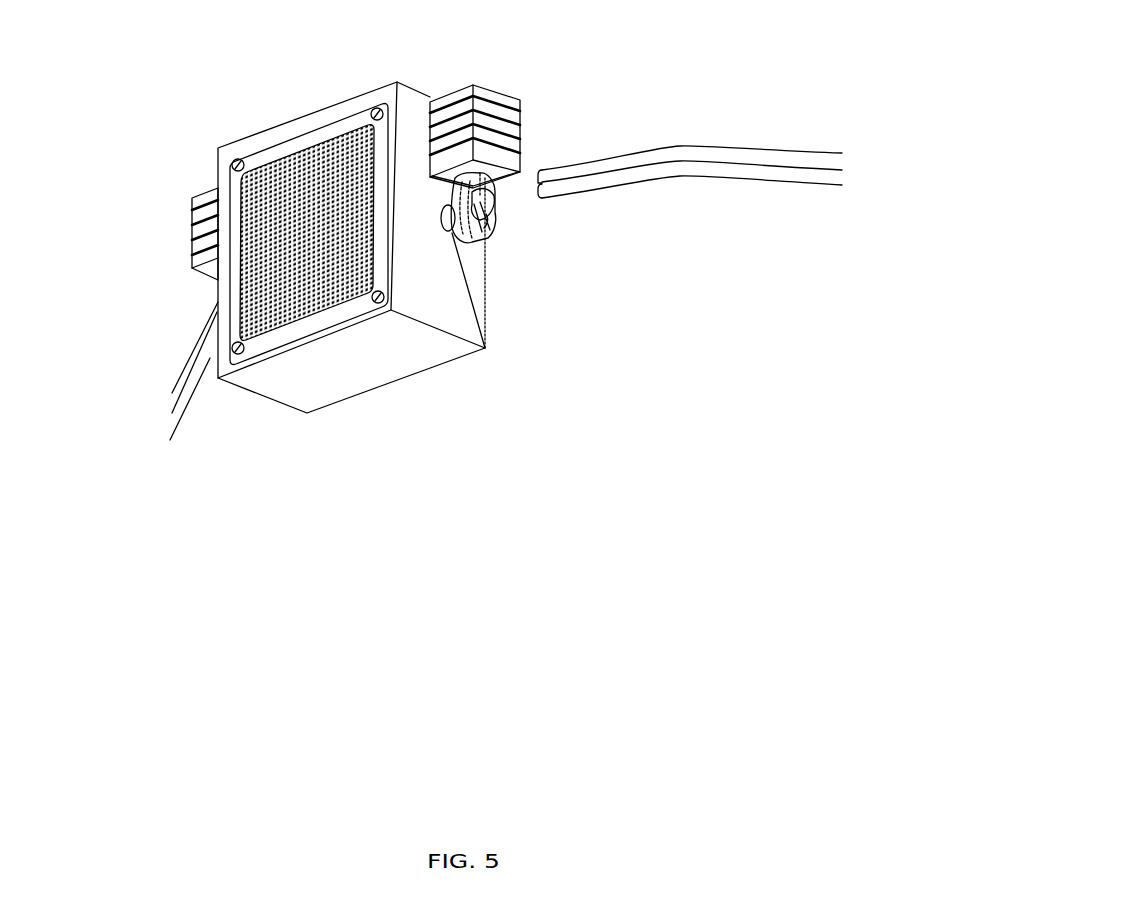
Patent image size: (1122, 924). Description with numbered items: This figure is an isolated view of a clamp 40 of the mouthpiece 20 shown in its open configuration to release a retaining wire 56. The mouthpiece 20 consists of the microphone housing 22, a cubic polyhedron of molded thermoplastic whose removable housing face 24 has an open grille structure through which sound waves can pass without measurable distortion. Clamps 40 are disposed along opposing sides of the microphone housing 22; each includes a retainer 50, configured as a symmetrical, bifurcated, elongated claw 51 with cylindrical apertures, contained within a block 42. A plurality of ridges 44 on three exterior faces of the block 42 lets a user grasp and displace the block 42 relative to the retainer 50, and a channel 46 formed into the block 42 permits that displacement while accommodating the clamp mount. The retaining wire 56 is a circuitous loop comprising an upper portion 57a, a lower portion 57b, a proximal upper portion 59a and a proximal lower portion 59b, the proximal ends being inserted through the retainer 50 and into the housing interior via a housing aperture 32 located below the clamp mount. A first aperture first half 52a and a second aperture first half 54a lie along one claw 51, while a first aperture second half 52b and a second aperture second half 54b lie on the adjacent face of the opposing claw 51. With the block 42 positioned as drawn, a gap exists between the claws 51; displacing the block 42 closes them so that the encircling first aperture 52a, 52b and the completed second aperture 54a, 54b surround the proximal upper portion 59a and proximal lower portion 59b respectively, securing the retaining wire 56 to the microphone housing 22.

The mouthpiece 20 is at (217, 64).
The microphone housing 22 is at (347, 377).
The housing face 24 is at (240, 283).
The housing aperture 32 is at (490, 240).
The clamp 40 is at (551, 91).
The block 42 is at (359, 148).
The ridges 44 is at (521, 133).
The channel 46 is at (475, 170).
The retainer 50 is at (550, 260).
The claw 51 is at (495, 198).
The first aperture first half 52a is at (484, 220).
The first aperture second half 52b is at (497, 203).
The second aperture first half 54a is at (480, 225).
The second aperture second half 54b is at (492, 212).
The retaining wire 56 is at (460, 239).
The upper portion 57a is at (676, 152).
The lower portion 57b is at (680, 167).
The proximal upper portion 59a is at (548, 173).
The proximal lower portion 59b is at (546, 190).